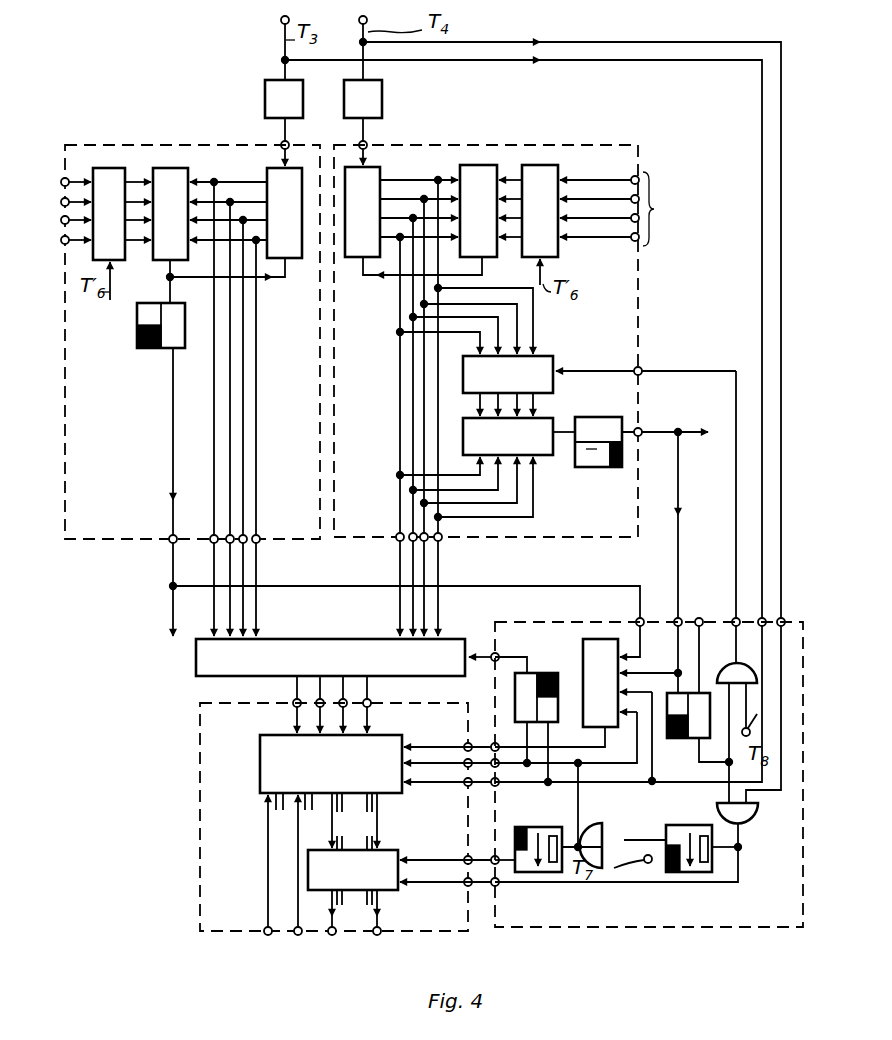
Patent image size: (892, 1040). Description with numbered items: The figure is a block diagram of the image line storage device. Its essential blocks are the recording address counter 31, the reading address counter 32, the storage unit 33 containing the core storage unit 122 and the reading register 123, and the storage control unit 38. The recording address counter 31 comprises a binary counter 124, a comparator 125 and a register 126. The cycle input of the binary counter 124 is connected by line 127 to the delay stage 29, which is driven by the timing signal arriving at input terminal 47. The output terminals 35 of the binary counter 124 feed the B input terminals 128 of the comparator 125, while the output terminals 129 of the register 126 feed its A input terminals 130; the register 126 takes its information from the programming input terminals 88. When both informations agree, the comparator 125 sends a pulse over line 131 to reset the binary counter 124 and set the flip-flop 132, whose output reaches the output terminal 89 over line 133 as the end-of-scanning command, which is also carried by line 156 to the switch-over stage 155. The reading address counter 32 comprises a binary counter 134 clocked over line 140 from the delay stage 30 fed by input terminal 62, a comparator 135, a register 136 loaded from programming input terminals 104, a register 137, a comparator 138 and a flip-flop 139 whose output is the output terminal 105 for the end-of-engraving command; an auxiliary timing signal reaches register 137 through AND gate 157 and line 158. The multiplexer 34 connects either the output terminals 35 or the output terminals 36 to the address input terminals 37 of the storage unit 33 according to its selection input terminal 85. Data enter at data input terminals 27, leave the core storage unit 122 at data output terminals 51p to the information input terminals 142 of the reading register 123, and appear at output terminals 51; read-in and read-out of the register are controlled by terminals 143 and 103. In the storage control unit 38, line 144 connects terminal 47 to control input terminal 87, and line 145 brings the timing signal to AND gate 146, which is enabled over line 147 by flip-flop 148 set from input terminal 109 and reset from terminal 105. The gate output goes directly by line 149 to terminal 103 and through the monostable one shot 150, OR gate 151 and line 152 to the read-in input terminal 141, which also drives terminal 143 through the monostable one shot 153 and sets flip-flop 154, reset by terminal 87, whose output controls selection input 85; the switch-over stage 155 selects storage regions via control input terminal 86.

The input terminal 47 is at (280, 18).
The input terminal 62 is at (367, 21).
The line 145 is at (626, 40).
The line 144 is at (760, 132).
The delay stage 29 is at (267, 96).
The delay stage 30 is at (379, 96).
The line 127 is at (281, 142).
The line 140 is at (367, 142).
The recording address counter 31 is at (274, 526).
The programming input terminals 88 is at (94, 182).
The register 126 is at (116, 186).
The comparator 125 is at (161, 172).
The A input terminals 130 is at (148, 198).
The B input terminals 128 is at (204, 196).
The binary counter 124 is at (266, 184).
The output terminals 35 is at (238, 530).
The output terminals 129 is at (140, 252).
The line 131 is at (284, 280).
The flip-flop 132 is at (137, 333).
The line 133 is at (172, 424).
The output terminal 89 is at (168, 542).
The line 156 is at (546, 584).
The reading address counter 32 is at (624, 344).
The binary counter 134 is at (372, 182).
The comparator 135 is at (478, 172).
The register 136 is at (540, 172).
The programming input terminals 104 is at (650, 192).
The output terminals 36 is at (417, 530).
The register 137 is at (546, 366).
The AND gate 157 is at (728, 670).
The comparator 138 is at (542, 448).
The flip-flop 139 is at (612, 424).
The output terminal 105 is at (644, 430).
The line 158 is at (736, 516).
The multiplexer 34 is at (196, 662).
The selection input terminal 85 is at (467, 652).
The address input terminals 37 is at (328, 686).
The storage unit 33 is at (207, 728).
The core storage unit 122 is at (270, 764).
The read-in input terminal 141 is at (474, 744).
The control input terminal 86 is at (494, 744).
The control input terminal 87 is at (466, 784).
The data input terminals 27 is at (267, 936).
The information input terminals 142 is at (356, 846).
The data output terminals 51p is at (327, 821).
The reading register 123 is at (388, 886).
The input terminal 143 is at (466, 860).
The control input terminal 103 is at (466, 886).
The output terminals 51 is at (358, 906).
The storage control unit 38 is at (623, 924).
The switch-over stage 155 is at (600, 640).
The input terminal 109 is at (692, 620).
The flip-flop 154 is at (530, 674).
The line 147 is at (704, 790).
The flip-flop 148 is at (702, 744).
The AND gate 146 is at (750, 822).
The line 149 is at (658, 896).
The line 152 is at (577, 836).
The monostable one shot 153 is at (544, 848).
The OR gate 151 is at (610, 836).
The monostable one shot stage 150 is at (688, 876).